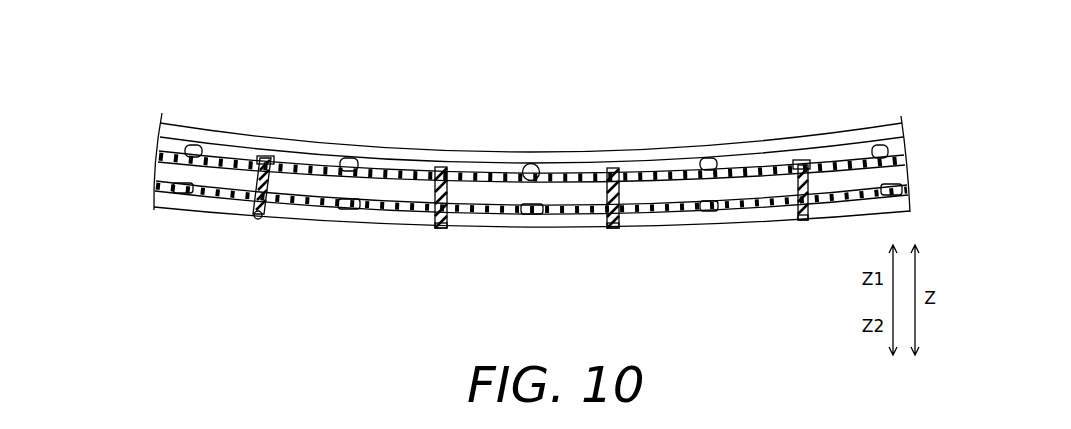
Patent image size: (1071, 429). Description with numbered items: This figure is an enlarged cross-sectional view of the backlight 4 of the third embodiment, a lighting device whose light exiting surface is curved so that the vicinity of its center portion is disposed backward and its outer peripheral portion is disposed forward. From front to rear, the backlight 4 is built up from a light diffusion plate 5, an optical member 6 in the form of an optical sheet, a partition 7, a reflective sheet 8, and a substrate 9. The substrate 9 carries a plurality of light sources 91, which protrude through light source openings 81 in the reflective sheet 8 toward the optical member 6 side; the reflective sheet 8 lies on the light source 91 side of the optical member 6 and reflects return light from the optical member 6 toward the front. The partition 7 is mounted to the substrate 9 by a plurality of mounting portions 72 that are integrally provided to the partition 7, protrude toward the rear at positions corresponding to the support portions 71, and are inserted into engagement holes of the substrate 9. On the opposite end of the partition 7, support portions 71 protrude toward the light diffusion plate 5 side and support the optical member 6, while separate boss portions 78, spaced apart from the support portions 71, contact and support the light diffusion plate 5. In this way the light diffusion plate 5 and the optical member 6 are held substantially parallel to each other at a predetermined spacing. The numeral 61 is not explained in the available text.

The backlight 4 is at (795, 50).
The light diffusion plate 5 is at (897, 127).
The optical member 6 is at (897, 152).
The partition 7 is at (892, 170).
The reflective sheet 8 is at (909, 179).
The substrate 9 is at (898, 198).
The upper adhesive layer 61 is at (580, 170).
The support portion 71 is at (278, 160).
The mounting portion 72 is at (254, 220).
The boss portion 78 is at (192, 145).
The light source opening 81 is at (518, 218).
The light source 91 is at (187, 195).